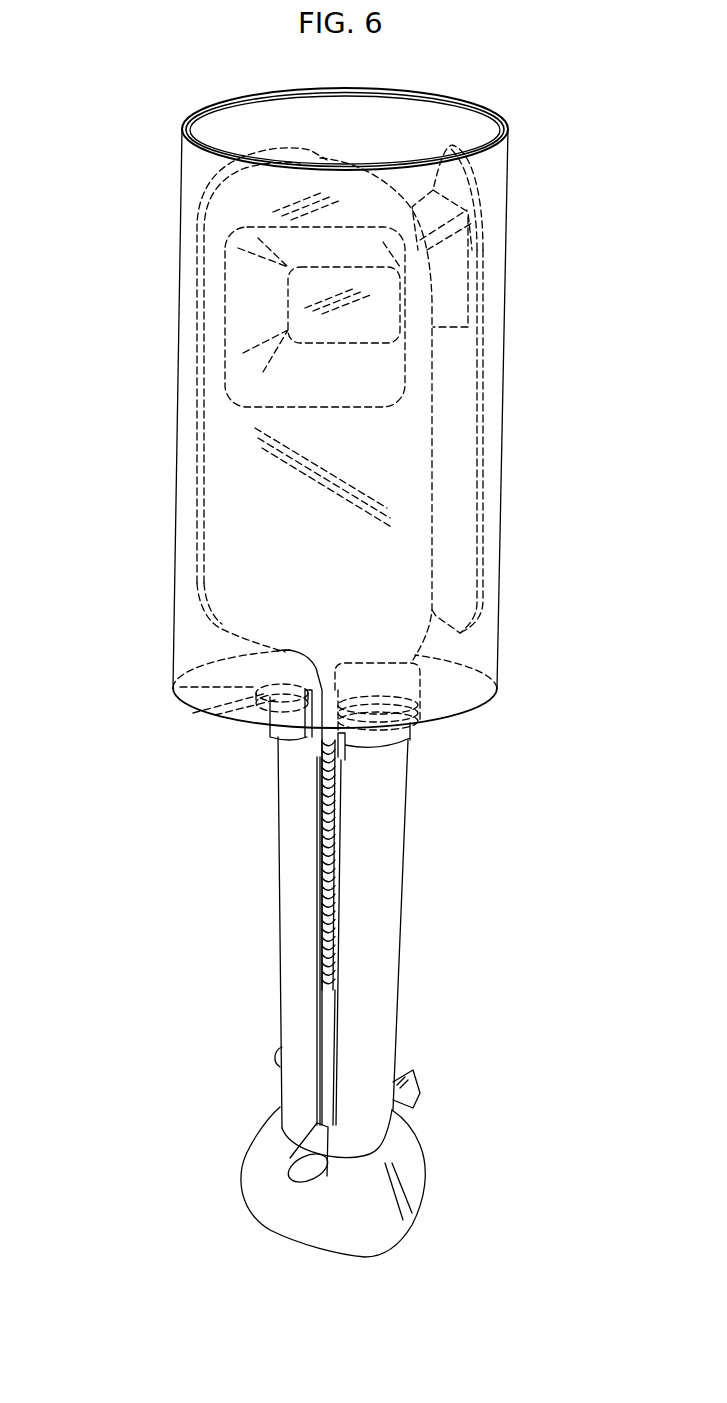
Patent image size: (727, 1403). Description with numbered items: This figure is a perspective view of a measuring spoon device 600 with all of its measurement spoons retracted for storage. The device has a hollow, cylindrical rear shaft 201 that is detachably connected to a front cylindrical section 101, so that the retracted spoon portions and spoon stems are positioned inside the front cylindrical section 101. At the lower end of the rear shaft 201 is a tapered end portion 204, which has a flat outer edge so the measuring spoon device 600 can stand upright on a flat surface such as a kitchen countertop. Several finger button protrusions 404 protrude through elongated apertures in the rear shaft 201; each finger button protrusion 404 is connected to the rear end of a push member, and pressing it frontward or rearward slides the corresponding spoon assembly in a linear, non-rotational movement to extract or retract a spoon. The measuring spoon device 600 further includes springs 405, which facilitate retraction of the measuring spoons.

The measuring spoon device 600 is at (133, 137).
The front cylindrical section 101 is at (507, 420).
The rear shaft 201 is at (408, 893).
The spring 405 is at (323, 802).
The finger button protrusion 404 is at (272, 1050).
The tapered end portion 204 is at (428, 1173).